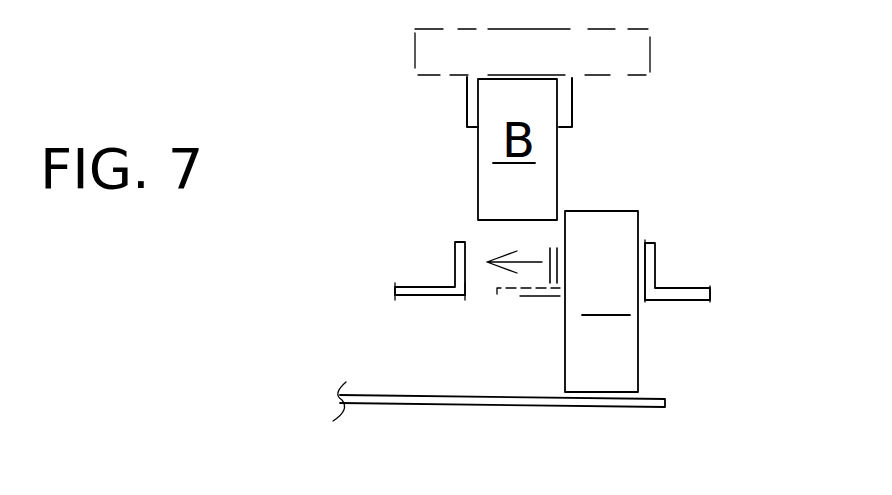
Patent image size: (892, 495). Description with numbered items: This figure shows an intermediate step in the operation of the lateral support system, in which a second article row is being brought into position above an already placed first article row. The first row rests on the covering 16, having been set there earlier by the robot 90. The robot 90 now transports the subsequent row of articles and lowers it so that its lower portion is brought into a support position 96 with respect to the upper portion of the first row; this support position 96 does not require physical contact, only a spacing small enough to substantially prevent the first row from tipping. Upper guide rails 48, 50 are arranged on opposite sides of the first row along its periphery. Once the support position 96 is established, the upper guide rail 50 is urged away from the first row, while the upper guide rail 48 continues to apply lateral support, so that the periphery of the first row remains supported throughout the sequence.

The robot 90 is at (655, 45).
The support position 96 is at (565, 206).
The upper guide rail 50 is at (455, 262).
The upper guide rail 48 is at (685, 288).
The covering 16 is at (640, 407).